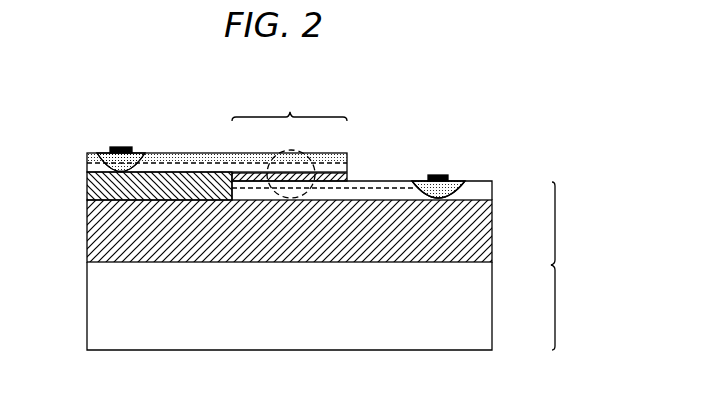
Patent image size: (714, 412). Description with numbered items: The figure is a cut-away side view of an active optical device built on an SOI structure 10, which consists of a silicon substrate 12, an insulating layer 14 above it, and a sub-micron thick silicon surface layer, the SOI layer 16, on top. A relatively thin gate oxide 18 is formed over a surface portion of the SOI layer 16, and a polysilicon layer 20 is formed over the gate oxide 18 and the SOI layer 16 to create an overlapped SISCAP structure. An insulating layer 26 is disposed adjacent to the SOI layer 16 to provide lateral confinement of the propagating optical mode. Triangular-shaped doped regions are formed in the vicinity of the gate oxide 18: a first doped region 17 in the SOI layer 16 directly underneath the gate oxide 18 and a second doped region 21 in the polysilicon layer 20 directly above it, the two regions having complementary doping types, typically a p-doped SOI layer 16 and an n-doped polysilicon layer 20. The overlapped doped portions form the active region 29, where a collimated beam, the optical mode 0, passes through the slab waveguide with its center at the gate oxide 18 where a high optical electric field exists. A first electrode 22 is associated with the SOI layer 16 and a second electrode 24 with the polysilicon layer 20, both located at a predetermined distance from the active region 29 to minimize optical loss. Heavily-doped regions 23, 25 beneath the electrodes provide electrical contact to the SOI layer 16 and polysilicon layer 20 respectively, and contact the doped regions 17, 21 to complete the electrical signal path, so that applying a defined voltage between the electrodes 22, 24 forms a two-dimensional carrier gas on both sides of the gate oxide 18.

The SOI structure 10 is at (592, 275).
The silicon substrate 12 is at (90, 298).
The insulating layer 14 is at (89, 228).
The SOI layer 16 is at (490, 192).
The first doped region 17 is at (289, 197).
The gate oxide 18 is at (347, 179).
The polysilicon layer 20 is at (238, 153).
The second doped region 21 is at (288, 158).
The first electrode 22 is at (440, 175).
The heavily-doped region 23 is at (460, 181).
The second electrode 24 is at (119, 148).
The heavily-doped region 25 is at (143, 153).
The insulating layer 26 is at (88, 184).
The active region 29 is at (289, 105).
The optical mode 0 is at (301, 154).